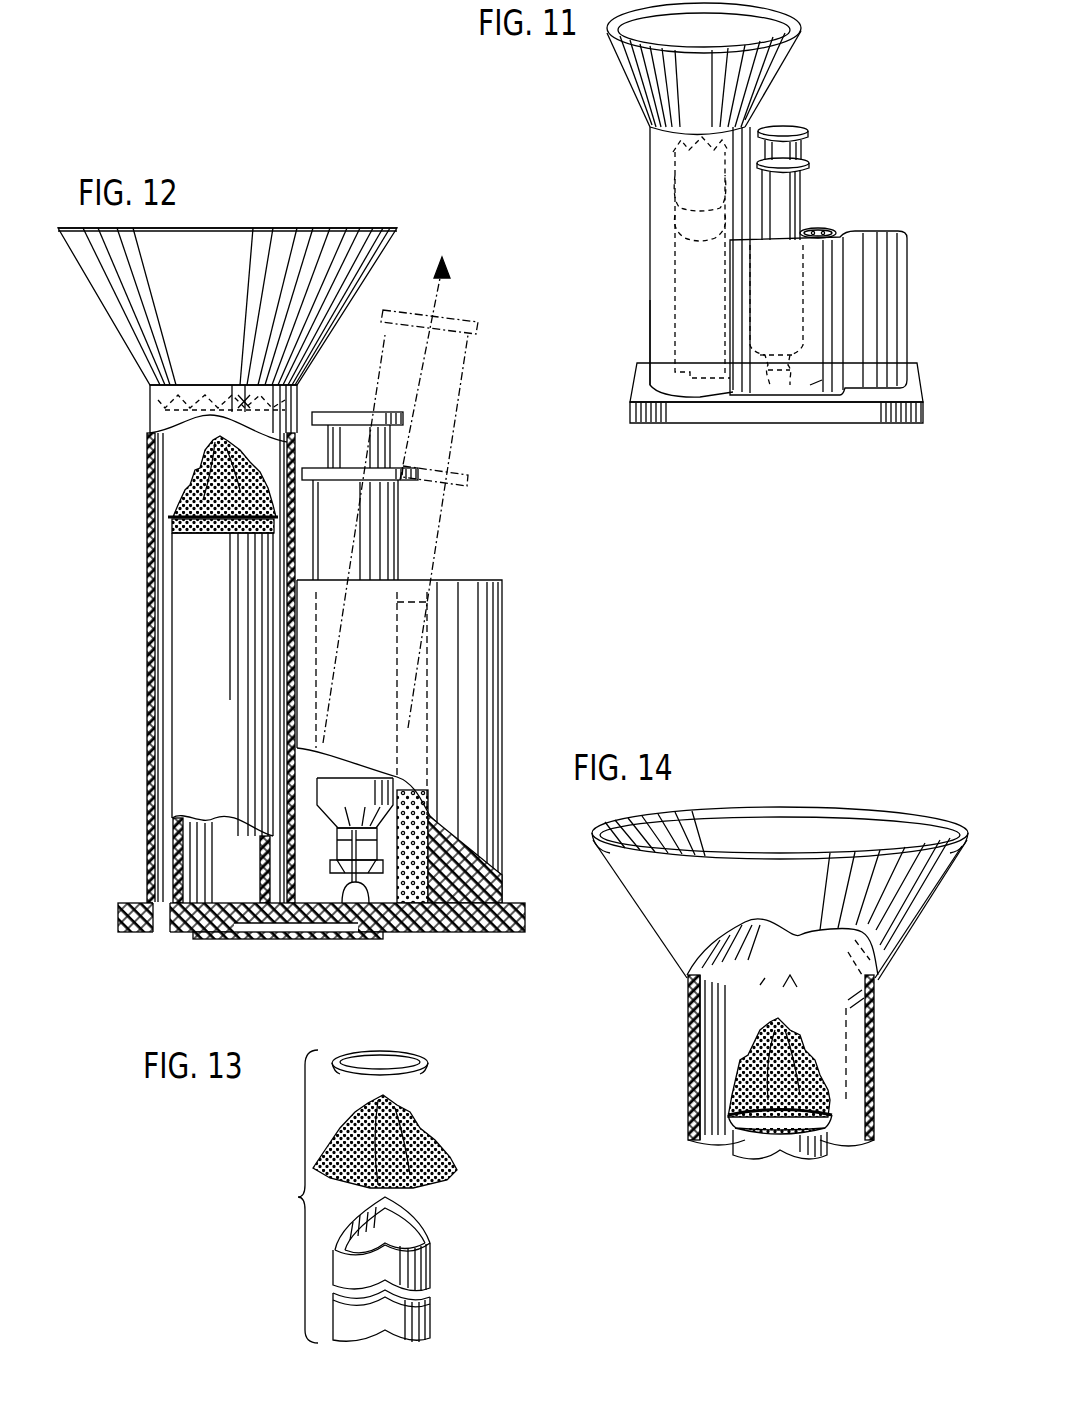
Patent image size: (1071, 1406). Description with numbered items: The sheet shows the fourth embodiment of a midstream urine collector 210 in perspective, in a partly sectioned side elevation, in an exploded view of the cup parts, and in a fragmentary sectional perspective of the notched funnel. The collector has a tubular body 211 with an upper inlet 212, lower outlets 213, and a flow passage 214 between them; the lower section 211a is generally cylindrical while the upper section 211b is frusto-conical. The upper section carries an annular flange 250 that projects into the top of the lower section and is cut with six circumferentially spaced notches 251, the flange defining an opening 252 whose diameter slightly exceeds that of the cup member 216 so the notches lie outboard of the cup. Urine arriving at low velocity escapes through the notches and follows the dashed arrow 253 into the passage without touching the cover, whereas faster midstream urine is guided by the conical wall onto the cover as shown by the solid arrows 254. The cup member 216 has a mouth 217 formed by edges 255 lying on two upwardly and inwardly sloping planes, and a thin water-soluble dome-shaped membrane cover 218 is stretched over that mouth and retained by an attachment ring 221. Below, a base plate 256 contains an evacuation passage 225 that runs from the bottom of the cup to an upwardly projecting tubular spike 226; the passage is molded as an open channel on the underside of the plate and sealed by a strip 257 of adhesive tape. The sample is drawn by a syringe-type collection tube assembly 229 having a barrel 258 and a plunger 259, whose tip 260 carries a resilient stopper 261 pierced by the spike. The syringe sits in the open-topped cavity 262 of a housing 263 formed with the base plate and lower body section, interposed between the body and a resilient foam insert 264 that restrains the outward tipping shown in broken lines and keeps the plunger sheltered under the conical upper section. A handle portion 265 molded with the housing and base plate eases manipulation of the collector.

In FIG. 11, the collector 210 is at (645, 138).
In FIG. 12, the collector 210 is at (148, 410).
In FIG. 11, the tubular body 211 is at (648, 241).
In FIG. 12, the tubular body 211 is at (150, 562).
In FIG. 11, the lower section of the body 211a is at (650, 310).
In FIG. 12, the lower section of the body 211a is at (150, 818).
In FIG. 14, the lower section of the body 211a is at (690, 1033).
In FIG. 11, the upper section of the body 211b is at (640, 75).
In FIG. 12, the upper section of the body 211b is at (120, 337).
In FIG. 14, the upper section of the body 211b is at (613, 873).
In FIG. 11, the upper inlet 212 is at (765, 33).
In FIG. 12, the upper inlet 212 is at (285, 228).
In FIG. 14, the upper inlet 212 is at (801, 826).
In FIG. 12, the lower outlets 213 is at (163, 934).
In FIG. 12, the flow passage 214 is at (160, 478).
In FIG. 14, the flow passage 214 is at (701, 1142).
In FIG. 12, the cup member 216 is at (172, 598).
In FIG. 13, the cup member 216 is at (432, 1313).
In FIG. 14, the cup member 216 is at (826, 1150).
In FIG. 13, the mouth 217 is at (435, 1242).
In FIG. 12, the membrane cover 218 is at (206, 454).
In FIG. 13, the membrane cover 218 is at (420, 1113).
In FIG. 14, the membrane cover 218 is at (728, 1088).
In FIG. 12, the attachment ring 221 is at (175, 517).
In FIG. 13, the attachment ring 221 is at (410, 1052).
In FIG. 14, the attachment ring 221 is at (763, 1132).
In FIG. 12, the evacuation passage 225 is at (283, 928).
In FIG. 12, the tubular spike 226 is at (336, 862).
In FIG. 11, the collection tube assembly 229 is at (803, 189).
In FIG. 12, the collection tube assembly 229 is at (398, 529).
In FIG. 11, the annular flange 250 is at (660, 162).
In FIG. 12, the annular flange 250 is at (183, 393).
In FIG. 14, the annular flange 250 is at (700, 988).
In FIG. 12, the notches 251 is at (253, 390).
In FIG. 14, the notches 251 is at (803, 1033).
In FIG. 14, the opening 252 is at (858, 1006).
In FIG. 14, the dashed arrow 253 is at (862, 1026).
In FIG. 14, the solid arrows 254 is at (824, 956).
In FIG. 13, the edges 255 is at (428, 1226).
In FIG. 11, the base plate 256 is at (722, 424).
In FIG. 12, the base plate 256 is at (440, 934).
In FIG. 12, the strip 257 is at (340, 940).
In FIG. 11, the barrel 258 is at (781, 205).
In FIG. 12, the barrel 258 is at (400, 559).
In FIG. 11, the plunger 259 is at (808, 141).
In FIG. 12, the plunger 259 is at (365, 412).
In FIG. 12, the tip 260 is at (340, 833).
In FIG. 12, the resilient stopper 261 is at (342, 884).
In FIG. 11, the cavity 262 is at (838, 230).
In FIG. 12, the cavity 262 is at (300, 775).
In FIG. 11, the housing 263 is at (755, 287).
In FIG. 12, the housing 263 is at (300, 704).
In FIG. 11, the foam insert 264 is at (815, 380).
In FIG. 12, the foam insert 264 is at (412, 902).
In FIG. 11, the handle portion 265 is at (905, 262).